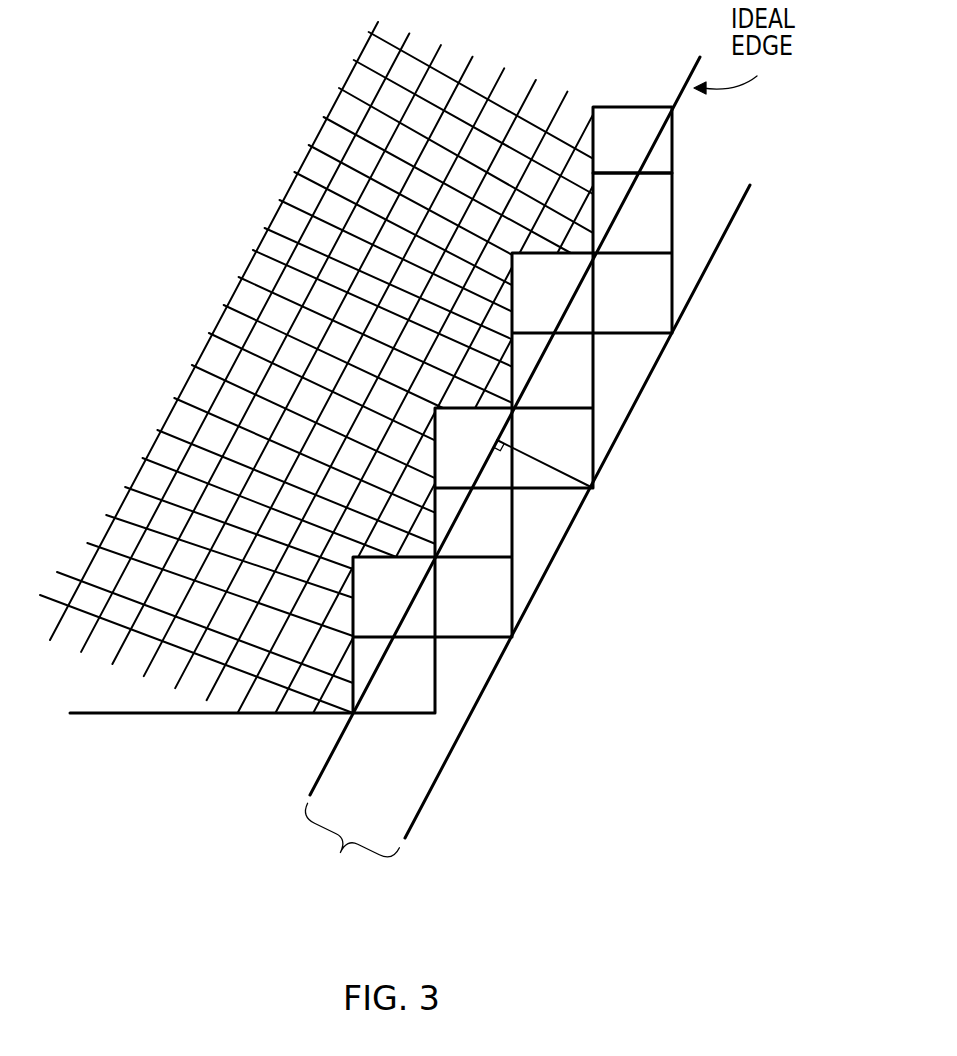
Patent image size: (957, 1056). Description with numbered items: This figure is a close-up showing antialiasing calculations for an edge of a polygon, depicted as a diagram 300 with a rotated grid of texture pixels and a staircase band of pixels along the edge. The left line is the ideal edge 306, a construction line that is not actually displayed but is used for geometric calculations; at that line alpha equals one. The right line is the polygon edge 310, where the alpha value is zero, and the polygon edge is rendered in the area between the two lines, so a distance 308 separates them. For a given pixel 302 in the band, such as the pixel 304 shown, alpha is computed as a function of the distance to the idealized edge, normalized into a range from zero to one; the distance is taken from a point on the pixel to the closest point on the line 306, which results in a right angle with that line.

The edge rendering diagram 300 is at (192, 295).
The pixel 302 is at (606, 117).
The pixel 304 is at (573, 450).
The ideal edge 306 is at (318, 779).
The edge width 308 is at (346, 846).
The polygon edge 310 is at (465, 738).